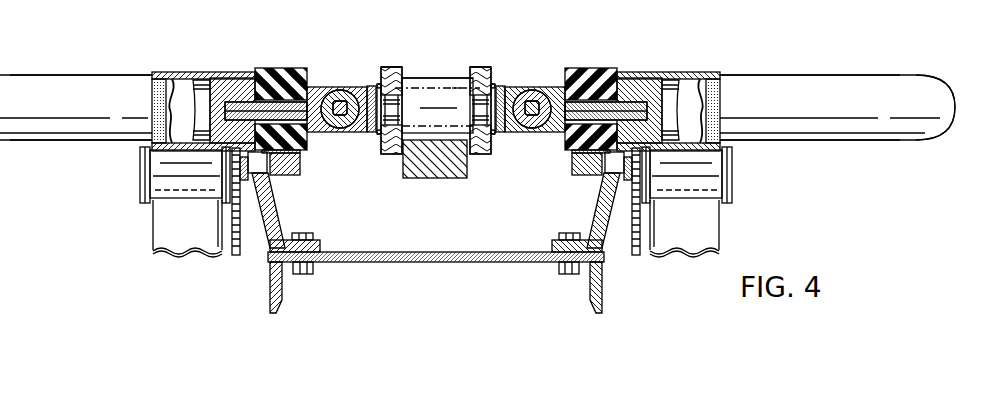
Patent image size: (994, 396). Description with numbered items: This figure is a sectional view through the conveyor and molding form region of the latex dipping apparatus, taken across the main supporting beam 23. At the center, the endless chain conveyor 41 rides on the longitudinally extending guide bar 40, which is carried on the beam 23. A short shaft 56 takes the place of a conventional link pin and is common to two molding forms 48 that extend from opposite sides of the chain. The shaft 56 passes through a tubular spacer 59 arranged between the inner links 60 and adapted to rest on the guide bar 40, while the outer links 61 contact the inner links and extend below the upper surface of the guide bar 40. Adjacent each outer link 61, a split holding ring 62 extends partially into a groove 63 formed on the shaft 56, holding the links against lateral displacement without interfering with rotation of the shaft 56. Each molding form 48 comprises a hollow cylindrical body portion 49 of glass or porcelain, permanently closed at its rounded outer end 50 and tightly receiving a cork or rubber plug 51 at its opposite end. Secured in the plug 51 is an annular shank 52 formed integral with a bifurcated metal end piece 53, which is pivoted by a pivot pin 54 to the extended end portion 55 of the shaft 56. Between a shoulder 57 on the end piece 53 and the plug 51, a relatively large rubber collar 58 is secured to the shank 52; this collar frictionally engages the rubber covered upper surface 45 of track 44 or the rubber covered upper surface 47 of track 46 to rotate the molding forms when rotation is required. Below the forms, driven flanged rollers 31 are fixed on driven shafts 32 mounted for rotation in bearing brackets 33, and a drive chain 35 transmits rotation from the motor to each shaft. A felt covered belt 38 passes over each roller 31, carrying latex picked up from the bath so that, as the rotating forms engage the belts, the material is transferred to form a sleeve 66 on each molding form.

The main supporting beam 23 is at (457, 263).
The driven flanged roller 31 is at (146, 170).
The driven shaft 32 is at (248, 172).
The bearing bracket 33 is at (273, 218).
The drive chain 35 is at (234, 256).
The felt covered belt 38 is at (180, 243).
The guide bar 40 is at (467, 178).
The endless chain conveyor 41 is at (439, 73).
The track 44 is at (578, 174).
The rubber covered upper surface 45 is at (574, 152).
The track 46 is at (300, 162).
The rubber covered upper surface 47 is at (300, 151).
The molding form 48 is at (141, 71).
The hollow cylindrical body portion 49 is at (67, 83).
The rounded end 50 is at (937, 97).
The plug 51 is at (238, 76).
The annular shank 52 is at (250, 100).
The metal end piece 53 is at (311, 88).
The pivot pin 54 is at (339, 96).
The extended end portion 55 is at (365, 88).
The short shaft 56 is at (456, 96).
The shoulder 57 is at (280, 69).
The rubber collar 58 is at (268, 69).
The tubular spacer 59 is at (427, 78).
The inner link 60 is at (400, 69).
The outer link 61 is at (384, 67).
The split holding ring 62 is at (378, 138).
The groove 63 is at (372, 134).
The sleeve 66 is at (153, 77).